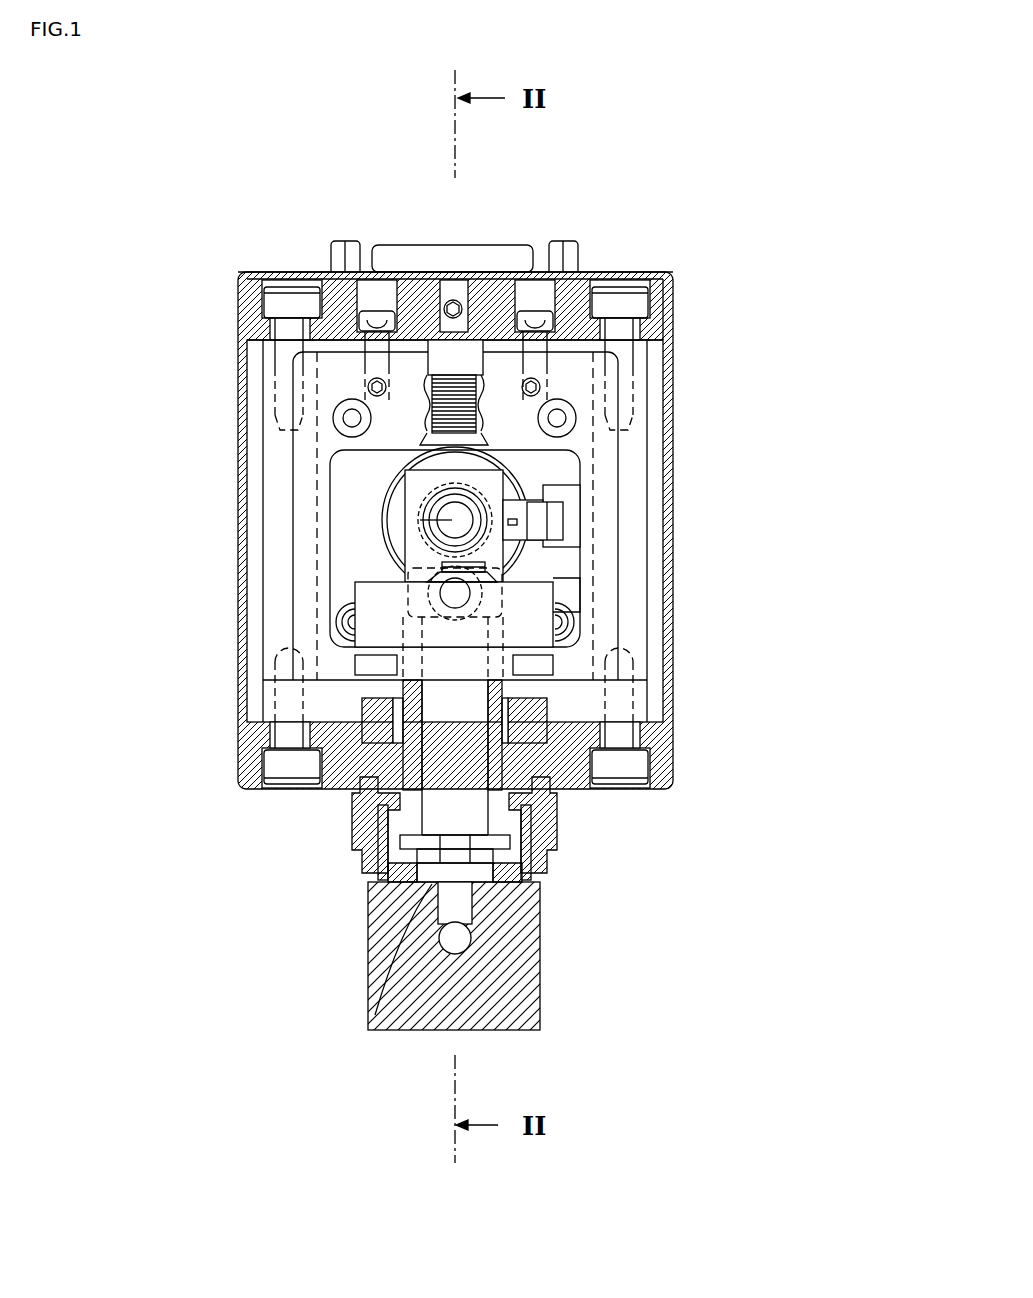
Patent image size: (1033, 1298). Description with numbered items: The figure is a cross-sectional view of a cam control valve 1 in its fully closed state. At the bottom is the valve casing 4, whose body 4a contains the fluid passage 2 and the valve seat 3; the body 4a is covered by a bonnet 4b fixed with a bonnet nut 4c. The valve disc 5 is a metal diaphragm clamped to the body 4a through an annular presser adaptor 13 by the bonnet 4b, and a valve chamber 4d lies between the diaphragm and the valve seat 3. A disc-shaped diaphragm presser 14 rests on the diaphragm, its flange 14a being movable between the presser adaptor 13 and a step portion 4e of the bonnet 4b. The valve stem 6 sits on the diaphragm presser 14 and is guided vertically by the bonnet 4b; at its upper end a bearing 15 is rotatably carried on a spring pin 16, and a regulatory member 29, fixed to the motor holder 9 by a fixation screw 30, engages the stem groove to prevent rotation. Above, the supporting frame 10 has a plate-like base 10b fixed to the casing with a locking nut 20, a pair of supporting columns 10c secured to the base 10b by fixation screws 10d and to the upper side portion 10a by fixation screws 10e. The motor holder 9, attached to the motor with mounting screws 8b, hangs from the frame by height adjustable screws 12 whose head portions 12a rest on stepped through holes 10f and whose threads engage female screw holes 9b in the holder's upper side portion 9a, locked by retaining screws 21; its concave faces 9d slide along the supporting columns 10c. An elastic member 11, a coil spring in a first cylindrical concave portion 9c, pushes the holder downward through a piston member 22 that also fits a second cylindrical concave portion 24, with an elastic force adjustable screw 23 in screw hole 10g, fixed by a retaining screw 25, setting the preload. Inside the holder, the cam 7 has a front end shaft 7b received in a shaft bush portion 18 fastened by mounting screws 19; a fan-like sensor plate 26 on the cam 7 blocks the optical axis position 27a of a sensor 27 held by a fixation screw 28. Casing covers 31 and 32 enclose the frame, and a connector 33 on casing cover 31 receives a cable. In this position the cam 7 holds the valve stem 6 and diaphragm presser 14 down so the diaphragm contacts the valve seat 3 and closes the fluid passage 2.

The cam control valve 1 is at (737, 213).
The fluid passage 2 is at (462, 948).
The valve seat 3 is at (478, 932).
The valve casing 4 is at (340, 930).
The body 4a is at (380, 980).
The bonnet 4b is at (352, 842).
The bonnet nut 4c is at (355, 812).
The valve chamber 4d is at (475, 903).
The step portion 4e is at (375, 865).
The valve disc 5 is at (462, 903).
The valve stem 6 is at (505, 798).
The cam 7 is at (177, 593).
The front end shaft 7b is at (355, 581).
The mounting screws 8b is at (333, 418).
The motor holder 9 is at (284, 512).
The upper side portion 9a is at (490, 340).
The female screw holes 9b is at (150, 437).
The first cylindrical concave portion 9c is at (430, 372).
The concave faces 9d is at (80, 467).
The supporting frame 10 is at (673, 358).
The upper side portion 10a is at (665, 303).
The base 10b is at (667, 786).
The supporting columns 10c is at (263, 546).
The fixation screws 10d is at (275, 775).
The fixation screws 10e is at (262, 292).
The stepped through holes 10f is at (336, 270).
The screw hole 10g is at (441, 276).
The elastic member 11 is at (330, 455).
The height adjustable screws 12 is at (278, 300).
The head portions 12a is at (362, 308).
The presser adaptor 13 is at (417, 875).
The diaphragm presser 14 is at (510, 843).
The flange 14a is at (522, 880).
The bearing 15 is at (173, 667).
The spring pin 16 is at (203, 628).
The shaft bush portion 18 is at (293, 598).
The mounting screws 19 is at (358, 678).
The locking nut 20 is at (293, 740).
The retaining screws 21 is at (368, 387).
The piston member 22 is at (340, 352).
The elastic force adjustable screw 23 is at (428, 345).
The second cylindrical concave portion 24 is at (463, 282).
The retaining screw 25 is at (437, 385).
The sensor plate 26 is at (525, 478).
The sensor 27 is at (580, 552).
The optical axis position 27a is at (660, 543).
The fixation screw 28 is at (492, 520).
The regulatory member 29 is at (640, 635).
The fixation screw 30 is at (500, 596).
The casing cover 31 is at (650, 270).
The casing cover 32 is at (520, 700).
The connector 33 is at (451, 298).